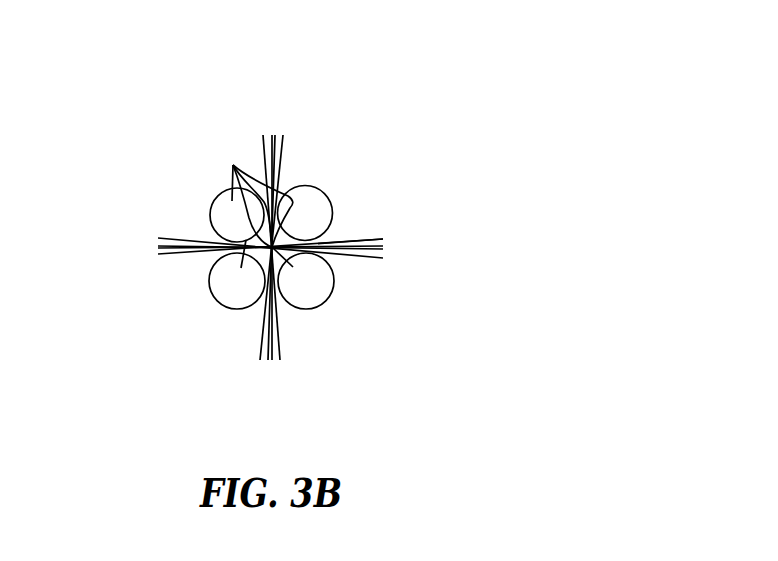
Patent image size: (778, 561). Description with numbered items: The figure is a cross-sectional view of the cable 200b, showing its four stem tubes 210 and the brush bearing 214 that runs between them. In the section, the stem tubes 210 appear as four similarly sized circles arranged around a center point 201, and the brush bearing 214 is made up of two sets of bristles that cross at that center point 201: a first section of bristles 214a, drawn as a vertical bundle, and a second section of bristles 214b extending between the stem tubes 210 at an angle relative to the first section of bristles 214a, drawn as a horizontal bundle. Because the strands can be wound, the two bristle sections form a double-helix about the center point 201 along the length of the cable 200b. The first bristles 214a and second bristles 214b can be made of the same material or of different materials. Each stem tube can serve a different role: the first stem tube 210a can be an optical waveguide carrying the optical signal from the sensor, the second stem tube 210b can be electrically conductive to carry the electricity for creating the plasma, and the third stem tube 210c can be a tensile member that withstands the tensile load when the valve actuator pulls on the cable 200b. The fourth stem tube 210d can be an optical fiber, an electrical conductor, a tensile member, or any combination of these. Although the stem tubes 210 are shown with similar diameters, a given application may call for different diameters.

The cable 200b is at (462, 56).
The center point 201 is at (318, 234).
The stem tubes 210 is at (233, 165).
The first stem tube 210a is at (320, 220).
The second stem tube 210b is at (317, 295).
The third stem tube 210c is at (238, 297).
The fourth stem tube 210d is at (220, 213).
The brush bearing 214 is at (290, 122).
The first section of bristles 214a is at (282, 158).
The second section of bristles 214b is at (373, 260).